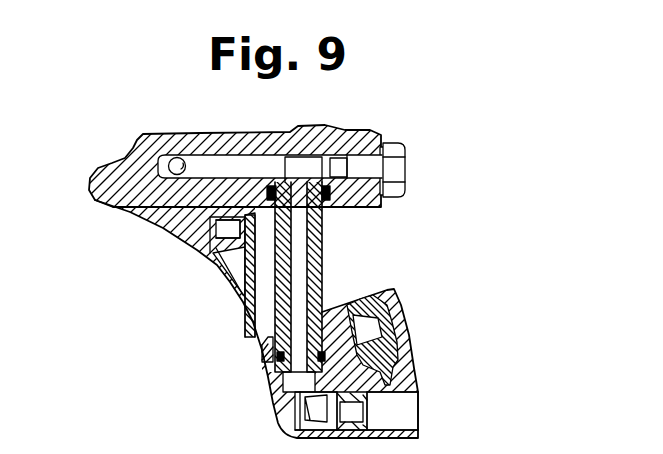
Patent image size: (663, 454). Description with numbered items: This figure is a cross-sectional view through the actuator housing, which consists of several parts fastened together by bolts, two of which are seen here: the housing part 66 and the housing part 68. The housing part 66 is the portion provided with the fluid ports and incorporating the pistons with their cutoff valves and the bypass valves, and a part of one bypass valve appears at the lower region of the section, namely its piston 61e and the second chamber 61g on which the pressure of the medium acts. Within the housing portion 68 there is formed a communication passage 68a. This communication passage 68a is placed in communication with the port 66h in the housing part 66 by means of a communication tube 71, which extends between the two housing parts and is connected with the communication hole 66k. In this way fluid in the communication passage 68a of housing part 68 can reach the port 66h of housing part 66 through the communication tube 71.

The housing part 68 is at (352, 143).
The communication passage 68a is at (197, 168).
The communication tube 71 is at (327, 257).
The housing part 66 is at (407, 365).
The hole 66h is at (275, 375).
The communication hole 66k is at (275, 392).
The second chamber 61g is at (282, 418).
The piston 61e is at (400, 407).